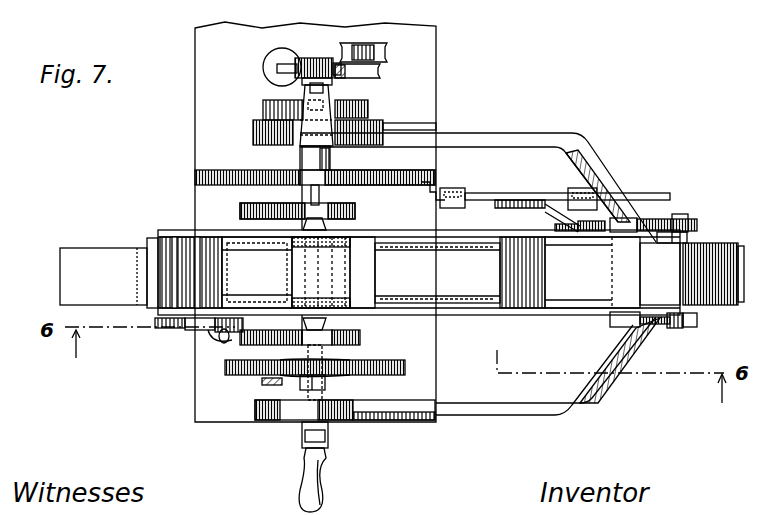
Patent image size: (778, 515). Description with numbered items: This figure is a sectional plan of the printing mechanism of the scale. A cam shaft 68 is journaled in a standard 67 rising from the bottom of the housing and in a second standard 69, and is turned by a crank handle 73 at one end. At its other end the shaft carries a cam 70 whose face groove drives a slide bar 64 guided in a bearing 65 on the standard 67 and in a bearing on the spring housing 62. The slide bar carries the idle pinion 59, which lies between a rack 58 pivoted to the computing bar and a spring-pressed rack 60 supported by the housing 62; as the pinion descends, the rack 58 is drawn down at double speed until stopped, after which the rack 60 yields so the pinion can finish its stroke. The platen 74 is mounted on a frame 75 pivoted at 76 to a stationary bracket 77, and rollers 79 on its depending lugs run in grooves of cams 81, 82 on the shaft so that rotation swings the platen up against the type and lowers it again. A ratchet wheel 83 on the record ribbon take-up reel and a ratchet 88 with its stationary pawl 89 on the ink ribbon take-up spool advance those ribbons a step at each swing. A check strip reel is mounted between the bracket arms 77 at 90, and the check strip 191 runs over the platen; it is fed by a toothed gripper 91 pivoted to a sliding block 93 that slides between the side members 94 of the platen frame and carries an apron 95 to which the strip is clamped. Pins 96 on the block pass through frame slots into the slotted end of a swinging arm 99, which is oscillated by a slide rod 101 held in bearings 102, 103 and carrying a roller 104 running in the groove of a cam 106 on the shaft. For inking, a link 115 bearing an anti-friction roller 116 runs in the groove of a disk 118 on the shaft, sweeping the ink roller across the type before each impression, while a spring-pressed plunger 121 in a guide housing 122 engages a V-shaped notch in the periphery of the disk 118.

The rack 58 is at (344, 78).
The idle pinion 59 is at (315, 58).
The rack 60 is at (290, 56).
The housing 62 is at (263, 77).
The slide bar 64 is at (308, 90).
The bearing 65 is at (262, 124).
The standard 67 is at (292, 150).
The shaft 68 is at (311, 193).
The second standard 69 is at (300, 420).
The cam 70 is at (368, 109).
The crank handle 73 is at (325, 476).
The platen 74 is at (298, 243).
The frame 75 is at (630, 237).
The pivot 76 is at (648, 219).
The stationary bracket 77 is at (485, 132).
The rollers 79 is at (328, 224).
The cam 81 is at (240, 212).
The cam 82 is at (228, 344).
The ratchet wheel 83 is at (160, 328).
The ratchet 88 is at (198, 330).
The stationary pawl 89 is at (222, 332).
The check strip reel mounting 90 is at (674, 329).
The toothed pawl or gripper 91 is at (352, 272).
The sliding block 93 is at (594, 240).
The side members 94 is at (478, 234).
The apron 95 is at (494, 246).
The pins 96 is at (594, 221).
The swinging arm 99 is at (537, 216).
The slide rod 101 is at (488, 193).
The bearing 102 is at (455, 188).
The bearing 103 is at (575, 188).
The roller 104 is at (428, 194).
The cam 106 is at (232, 167).
The link 115 is at (262, 380).
The anti-friction roller 116 is at (298, 349).
The disk 118 is at (408, 366).
The spring-pressed plunger 121 is at (280, 385).
The guide housing 122 is at (328, 382).
The check strip 191 is at (716, 242).